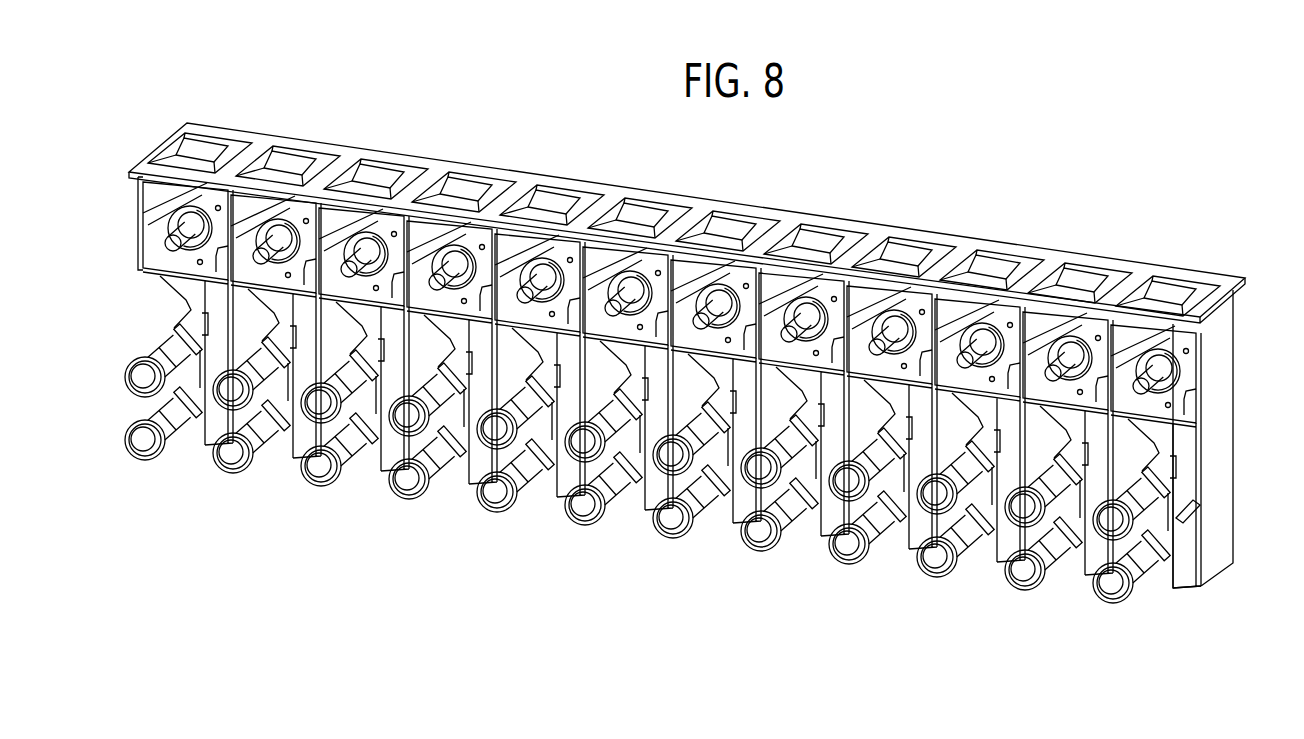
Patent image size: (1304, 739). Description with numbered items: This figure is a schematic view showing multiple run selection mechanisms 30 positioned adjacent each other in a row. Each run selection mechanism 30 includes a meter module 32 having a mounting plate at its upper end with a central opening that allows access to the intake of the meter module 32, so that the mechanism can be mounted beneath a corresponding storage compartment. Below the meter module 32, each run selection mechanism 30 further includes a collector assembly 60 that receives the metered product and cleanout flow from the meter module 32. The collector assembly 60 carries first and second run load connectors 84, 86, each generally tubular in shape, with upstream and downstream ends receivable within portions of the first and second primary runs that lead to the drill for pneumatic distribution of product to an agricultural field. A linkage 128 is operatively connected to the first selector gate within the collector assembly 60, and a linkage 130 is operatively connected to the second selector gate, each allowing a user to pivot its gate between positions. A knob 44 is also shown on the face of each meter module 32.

The meter module 32 is at (1236, 347).
The adjustment knob 44 is at (1150, 377).
The collector assembly 60 is at (1233, 480).
The run selection mechanism 30 is at (1187, 593).
The first run load connector 84 is at (1148, 573).
The second run load connector 86 is at (1103, 603).
The linkage 128 is at (1002, 568).
The linkage 130 is at (1041, 583).